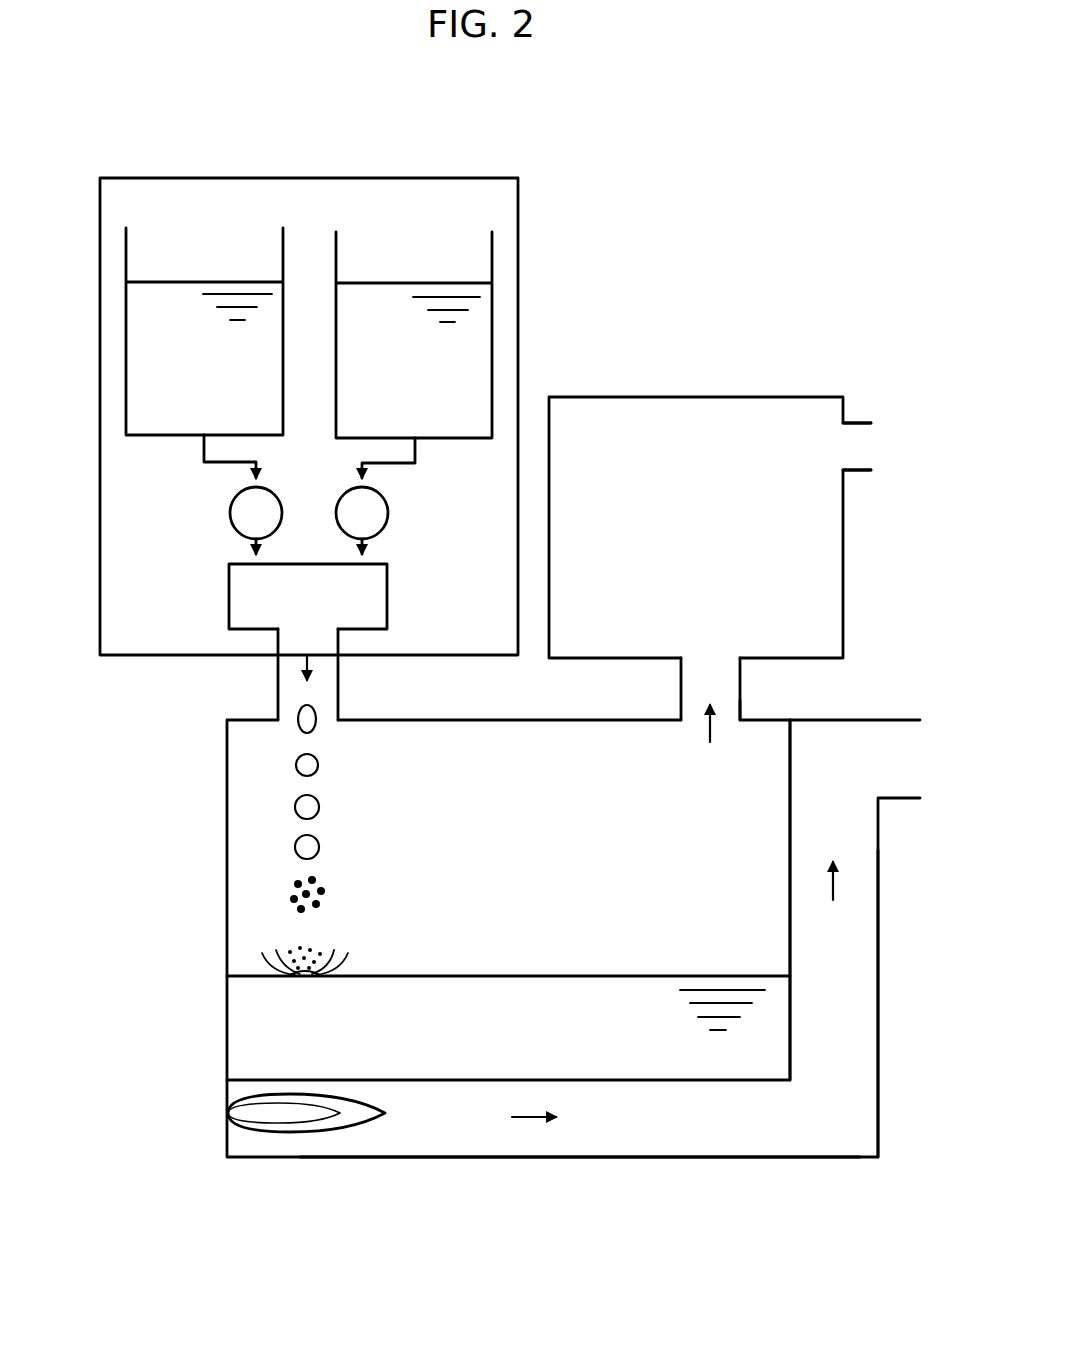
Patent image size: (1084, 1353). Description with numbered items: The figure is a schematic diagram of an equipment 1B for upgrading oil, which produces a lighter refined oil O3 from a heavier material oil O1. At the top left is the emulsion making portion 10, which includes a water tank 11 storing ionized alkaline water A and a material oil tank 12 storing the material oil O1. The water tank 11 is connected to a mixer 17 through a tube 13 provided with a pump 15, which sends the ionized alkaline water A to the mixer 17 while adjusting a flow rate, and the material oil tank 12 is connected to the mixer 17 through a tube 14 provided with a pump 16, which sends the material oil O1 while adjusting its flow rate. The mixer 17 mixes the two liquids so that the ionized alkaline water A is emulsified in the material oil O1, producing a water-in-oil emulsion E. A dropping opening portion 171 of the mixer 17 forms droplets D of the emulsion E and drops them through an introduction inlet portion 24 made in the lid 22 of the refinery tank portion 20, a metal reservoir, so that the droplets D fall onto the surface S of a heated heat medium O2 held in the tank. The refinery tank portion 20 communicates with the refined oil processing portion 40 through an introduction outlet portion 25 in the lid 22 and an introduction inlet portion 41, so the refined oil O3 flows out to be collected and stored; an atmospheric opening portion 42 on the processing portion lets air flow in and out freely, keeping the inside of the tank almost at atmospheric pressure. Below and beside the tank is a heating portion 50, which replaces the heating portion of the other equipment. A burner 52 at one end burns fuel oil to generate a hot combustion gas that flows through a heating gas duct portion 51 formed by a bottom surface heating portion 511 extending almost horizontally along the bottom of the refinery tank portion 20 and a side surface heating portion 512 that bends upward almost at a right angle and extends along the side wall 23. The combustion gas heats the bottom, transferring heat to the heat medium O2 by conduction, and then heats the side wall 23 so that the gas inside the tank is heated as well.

The equipment for upgrading oil 1B is at (732, 140).
The emulsion making portion 10 is at (458, 175).
The water tank 11 is at (126, 262).
The material oil tank 12 is at (492, 262).
The ionized alkaline water A is at (130, 390).
The material oil O1 is at (477, 358).
The tube 13 is at (204, 450).
The tube 14 is at (415, 456).
The pump 15 is at (230, 513).
The pump 16 is at (388, 513).
The mixer 17 is at (388, 580).
The emulsion E is at (248, 601).
The dropping opening portion 171 is at (318, 656).
The refinery tank portion 20 is at (217, 838).
The lid 22 is at (446, 718).
The side wall 23 is at (790, 866).
The introduction inlet portion 24 is at (293, 704).
The droplets D is at (316, 722).
The surface S is at (522, 975).
The heat medium O2 is at (248, 1027).
The heating portion 50 is at (218, 1098).
The bottom surface heating portion 511 is at (707, 1160).
The side surface heating portion 512 is at (878, 1000).
The heating gas duct portion 51 is at (910, 1237).
The burner 52 is at (273, 1118).
The refined oil processing portion 40 is at (732, 385).
The introduction inlet portion 41 is at (710, 660).
The atmospheric opening portion 42 is at (865, 450).
The refined oil O3 is at (706, 736).
The introduction outlet portion 25 is at (724, 688).